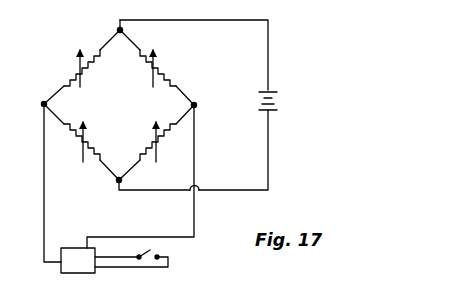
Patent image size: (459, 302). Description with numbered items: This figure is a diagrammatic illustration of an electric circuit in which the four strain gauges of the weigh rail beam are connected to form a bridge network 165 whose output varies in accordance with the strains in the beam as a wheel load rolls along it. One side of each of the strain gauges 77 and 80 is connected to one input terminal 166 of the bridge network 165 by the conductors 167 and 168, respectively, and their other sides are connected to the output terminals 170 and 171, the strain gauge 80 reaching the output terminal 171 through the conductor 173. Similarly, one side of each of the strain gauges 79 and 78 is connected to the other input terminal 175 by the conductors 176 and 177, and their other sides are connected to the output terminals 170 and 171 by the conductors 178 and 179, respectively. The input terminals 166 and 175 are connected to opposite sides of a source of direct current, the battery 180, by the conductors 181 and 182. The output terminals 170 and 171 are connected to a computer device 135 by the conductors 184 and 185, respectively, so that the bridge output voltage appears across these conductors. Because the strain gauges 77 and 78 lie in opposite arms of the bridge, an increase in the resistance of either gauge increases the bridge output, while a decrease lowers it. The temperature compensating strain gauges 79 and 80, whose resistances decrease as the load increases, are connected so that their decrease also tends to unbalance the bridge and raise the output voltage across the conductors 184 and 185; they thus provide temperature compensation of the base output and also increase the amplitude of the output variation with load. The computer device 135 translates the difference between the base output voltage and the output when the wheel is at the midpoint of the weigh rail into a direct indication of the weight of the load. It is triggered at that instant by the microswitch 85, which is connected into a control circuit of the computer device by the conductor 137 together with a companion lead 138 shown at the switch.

The strain gauge 77 is at (90, 72).
The strain gauge 78 is at (163, 136).
The temperature compensating strain gauge 79 is at (86, 133).
The temperature compensating strain gauge 80 is at (160, 67).
The microswitch 85 is at (151, 249).
The computer device 135 is at (72, 272).
The conductor 137 is at (131, 256).
The lead 138 is at (108, 262).
The bridge network 165 is at (97, 204).
The input terminal 166 is at (118, 29).
The conductor 167 is at (99, 53).
The conductor 168 is at (124, 31).
The output terminal 170 is at (42, 104).
The output terminal 171 is at (196, 105).
The conductor 173 is at (57, 91).
The input terminal 175 is at (117, 181).
The conductor 176 is at (88, 142).
The conductor 177 is at (129, 166).
The conductor 178 is at (52, 112).
The conductor 179 is at (185, 112).
The battery 180 is at (284, 103).
The conductor 181 is at (240, 20).
The conductor 182 is at (237, 191).
The conductor 184 is at (43, 177).
The conductor 185 is at (195, 220).